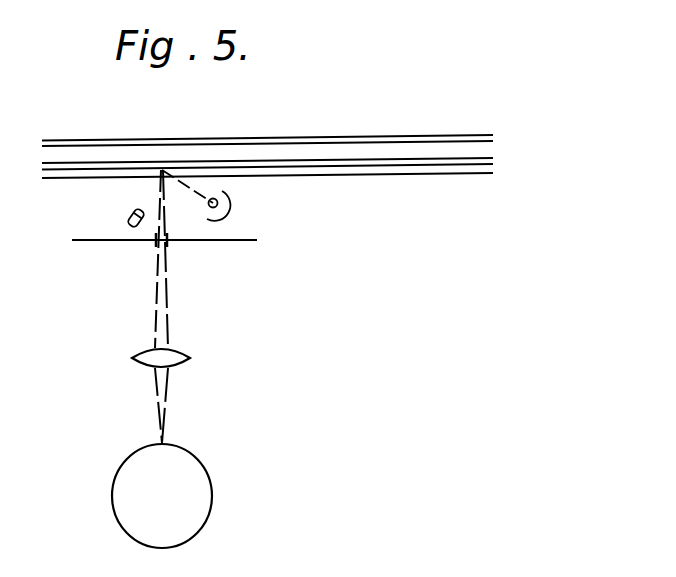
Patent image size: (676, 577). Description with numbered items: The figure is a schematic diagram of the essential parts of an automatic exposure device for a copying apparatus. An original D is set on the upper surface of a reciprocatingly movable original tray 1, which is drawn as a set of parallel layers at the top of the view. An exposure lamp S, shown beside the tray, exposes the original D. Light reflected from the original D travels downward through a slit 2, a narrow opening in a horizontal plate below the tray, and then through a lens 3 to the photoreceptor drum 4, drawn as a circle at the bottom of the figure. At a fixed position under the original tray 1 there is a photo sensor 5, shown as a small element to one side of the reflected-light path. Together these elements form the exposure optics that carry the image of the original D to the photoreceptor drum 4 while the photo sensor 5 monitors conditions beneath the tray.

The original tray 1 is at (311, 167).
The original D is at (384, 166).
The exposure lamp S is at (229, 203).
The photo sensor 5 is at (130, 217).
The slit 2 is at (157, 249).
The lens 3 is at (172, 358).
The photoreceptor drum 4 is at (193, 490).